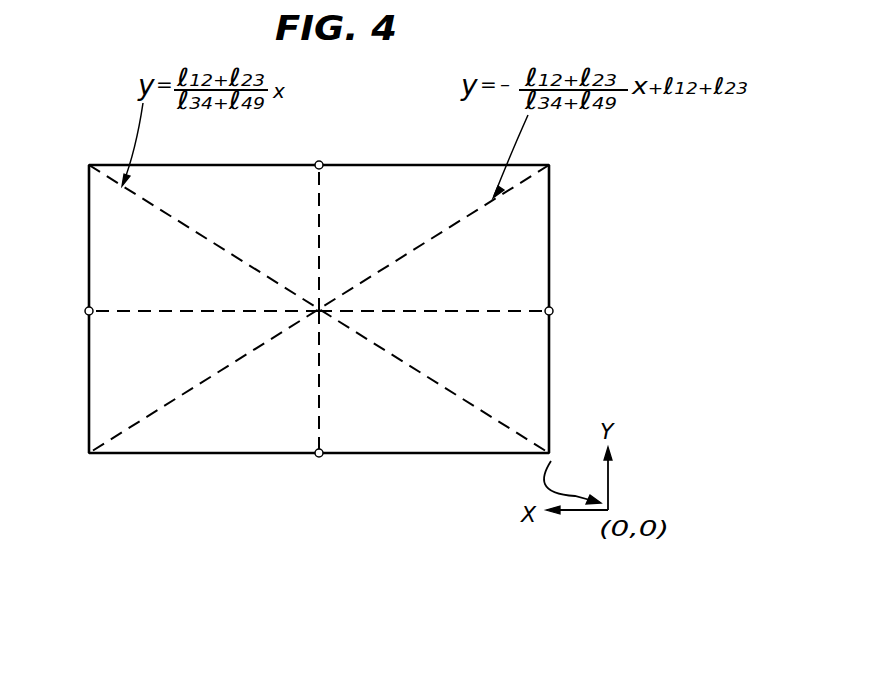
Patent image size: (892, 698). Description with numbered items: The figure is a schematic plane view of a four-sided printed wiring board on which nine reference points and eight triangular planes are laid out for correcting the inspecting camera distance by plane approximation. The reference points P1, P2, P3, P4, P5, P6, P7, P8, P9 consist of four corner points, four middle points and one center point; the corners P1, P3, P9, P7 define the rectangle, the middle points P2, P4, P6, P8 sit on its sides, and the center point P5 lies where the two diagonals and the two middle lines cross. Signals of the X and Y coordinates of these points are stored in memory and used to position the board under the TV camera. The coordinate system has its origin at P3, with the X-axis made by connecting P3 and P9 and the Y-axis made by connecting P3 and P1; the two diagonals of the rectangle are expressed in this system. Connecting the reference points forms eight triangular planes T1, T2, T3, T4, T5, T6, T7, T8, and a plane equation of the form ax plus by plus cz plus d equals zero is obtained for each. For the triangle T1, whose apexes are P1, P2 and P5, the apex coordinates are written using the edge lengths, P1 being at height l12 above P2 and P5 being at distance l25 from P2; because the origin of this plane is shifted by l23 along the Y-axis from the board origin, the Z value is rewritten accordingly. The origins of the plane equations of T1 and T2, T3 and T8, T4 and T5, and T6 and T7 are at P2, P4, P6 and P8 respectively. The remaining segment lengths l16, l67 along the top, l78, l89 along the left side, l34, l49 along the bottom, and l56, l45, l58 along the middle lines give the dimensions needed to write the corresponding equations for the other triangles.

The reference point P1 is at (560, 156).
The reference point P2 is at (567, 313).
The reference point P3 is at (561, 467).
The reference point P4 is at (310, 471).
The reference point P5 is at (335, 285).
The reference point P6 is at (315, 151).
The reference point P7 is at (69, 155).
The reference point P8 is at (70, 311).
The reference point P9 is at (68, 470).
The triangular plane T1 is at (434, 238).
The triangular plane T2 is at (434, 382).
The triangular plane T3 is at (434, 382).
The triangular plane T4 is at (434, 238).
The triangular plane T5 is at (204, 238).
The triangular plane T6 is at (204, 238).
The triangular plane T7 is at (204, 382).
The triangular plane T8 is at (204, 382).
The distance between points P1 and P2 l12 is at (574, 238).
The distance between points P1 and P6 l16 is at (434, 152).
The distance between points P2 and P3 l23 is at (573, 382).
The distance between points P2 and P5 l25 is at (434, 300).
The distance between points P3 and P4 l34 is at (434, 473).
The distance between points P4 and P5 l45 is at (341, 382).
The distance between points P4 and P9 l49 is at (204, 474).
The distance between points P5 and P6 l56 is at (341, 238).
The distance between points P5 and P8 l58 is at (204, 300).
The distance between points P6 and P7 l67 is at (204, 152).
The distance between points P7 and P8 l78 is at (63, 238).
The distance between points P8 and P9 l89 is at (67, 382).